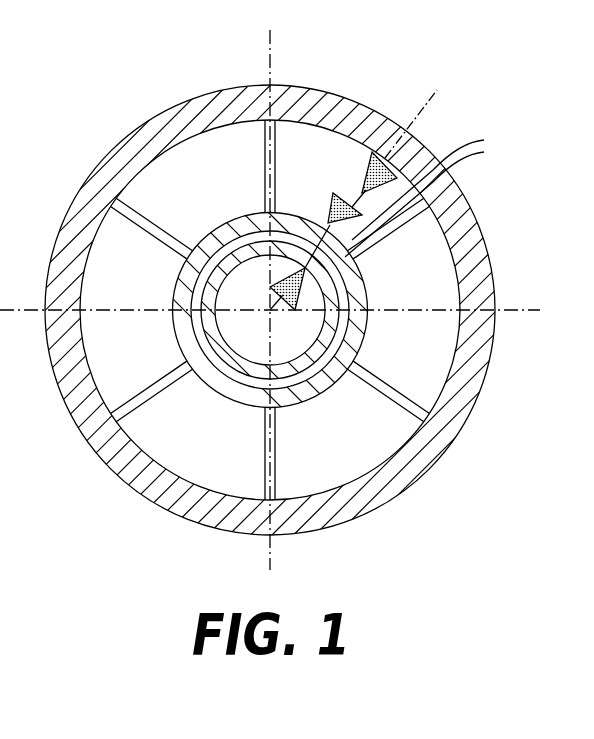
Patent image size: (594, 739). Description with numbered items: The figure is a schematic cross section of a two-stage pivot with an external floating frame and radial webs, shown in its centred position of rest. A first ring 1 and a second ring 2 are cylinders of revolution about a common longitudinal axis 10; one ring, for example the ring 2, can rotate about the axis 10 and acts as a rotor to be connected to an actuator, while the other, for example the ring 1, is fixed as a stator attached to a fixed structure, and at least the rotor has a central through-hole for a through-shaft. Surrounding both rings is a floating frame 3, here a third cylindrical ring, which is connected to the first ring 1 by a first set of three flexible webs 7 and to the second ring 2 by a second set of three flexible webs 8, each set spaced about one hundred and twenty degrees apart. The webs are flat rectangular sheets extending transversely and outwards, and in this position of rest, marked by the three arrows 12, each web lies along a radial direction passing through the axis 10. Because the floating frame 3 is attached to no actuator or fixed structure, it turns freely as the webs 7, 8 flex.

The first ring 1 is at (293, 367).
The second ring 2 is at (183, 350).
The floating frame 3 is at (450, 428).
The flexible web 7 is at (277, 167).
The flexible web 8 is at (128, 207).
The longitudinal axis 10 is at (270, 308).
The arrows 12 is at (412, 179).